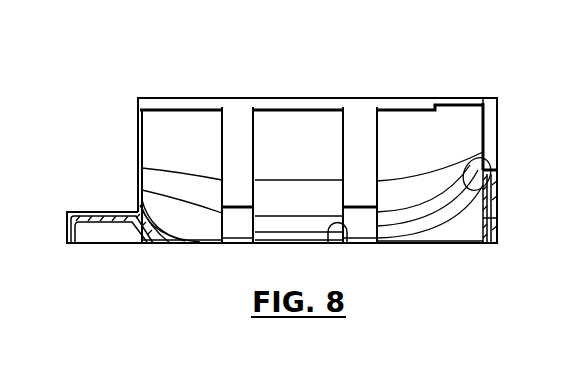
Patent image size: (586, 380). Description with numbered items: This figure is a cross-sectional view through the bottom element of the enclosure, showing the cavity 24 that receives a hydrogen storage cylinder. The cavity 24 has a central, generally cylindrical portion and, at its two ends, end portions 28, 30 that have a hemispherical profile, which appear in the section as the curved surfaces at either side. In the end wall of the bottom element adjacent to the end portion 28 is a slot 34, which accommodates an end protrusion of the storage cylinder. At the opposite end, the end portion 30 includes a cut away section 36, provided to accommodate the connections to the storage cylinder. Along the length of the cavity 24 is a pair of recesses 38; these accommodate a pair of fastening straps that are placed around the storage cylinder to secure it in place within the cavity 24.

The cavity 24 is at (301, 173).
The end portion 28 is at (498, 160).
The end portion 30 is at (141, 205).
The slot 34 is at (500, 128).
The cut away section 36 is at (354, 238).
The recesses 38 is at (238, 118).